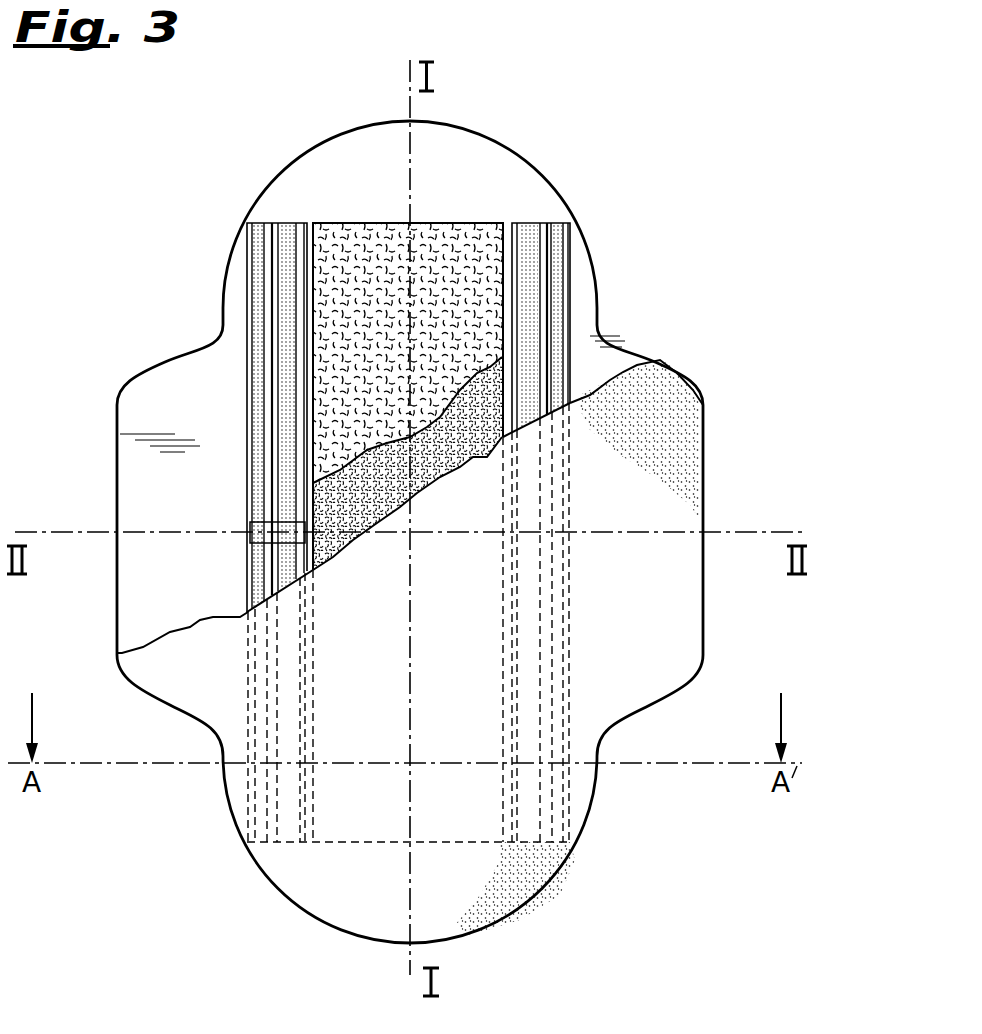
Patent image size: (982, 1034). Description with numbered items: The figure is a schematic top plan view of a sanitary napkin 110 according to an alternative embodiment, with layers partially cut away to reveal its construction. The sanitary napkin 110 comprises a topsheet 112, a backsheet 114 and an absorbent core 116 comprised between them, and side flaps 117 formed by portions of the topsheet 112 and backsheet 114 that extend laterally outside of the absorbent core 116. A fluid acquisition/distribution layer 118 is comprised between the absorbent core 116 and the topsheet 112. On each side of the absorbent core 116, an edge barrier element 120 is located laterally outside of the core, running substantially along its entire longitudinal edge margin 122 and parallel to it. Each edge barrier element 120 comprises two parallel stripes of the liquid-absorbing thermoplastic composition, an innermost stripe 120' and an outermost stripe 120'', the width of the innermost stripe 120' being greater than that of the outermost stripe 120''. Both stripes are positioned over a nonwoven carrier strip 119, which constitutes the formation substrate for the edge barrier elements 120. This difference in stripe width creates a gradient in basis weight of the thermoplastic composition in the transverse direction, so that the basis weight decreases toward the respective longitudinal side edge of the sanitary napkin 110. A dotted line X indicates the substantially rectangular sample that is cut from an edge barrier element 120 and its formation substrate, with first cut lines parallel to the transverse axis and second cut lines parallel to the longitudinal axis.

The sanitary napkin 110 is at (588, 84).
The topsheet 112 is at (490, 872).
The backsheet 114 is at (484, 160).
The absorbent core 116 is at (387, 237).
The side flaps 117 is at (145, 579).
The fluid acquisition/distribution layer 118 is at (460, 467).
The nonwoven carrier strip 119 is at (248, 310).
The edge barrier element 120 is at (411, 475).
The innermost stripe 120' is at (384, 399).
The outermost stripe 120'' is at (393, 416).
The longitudinal edge margin 122 is at (307, 262).
The dotted line X is at (293, 520).